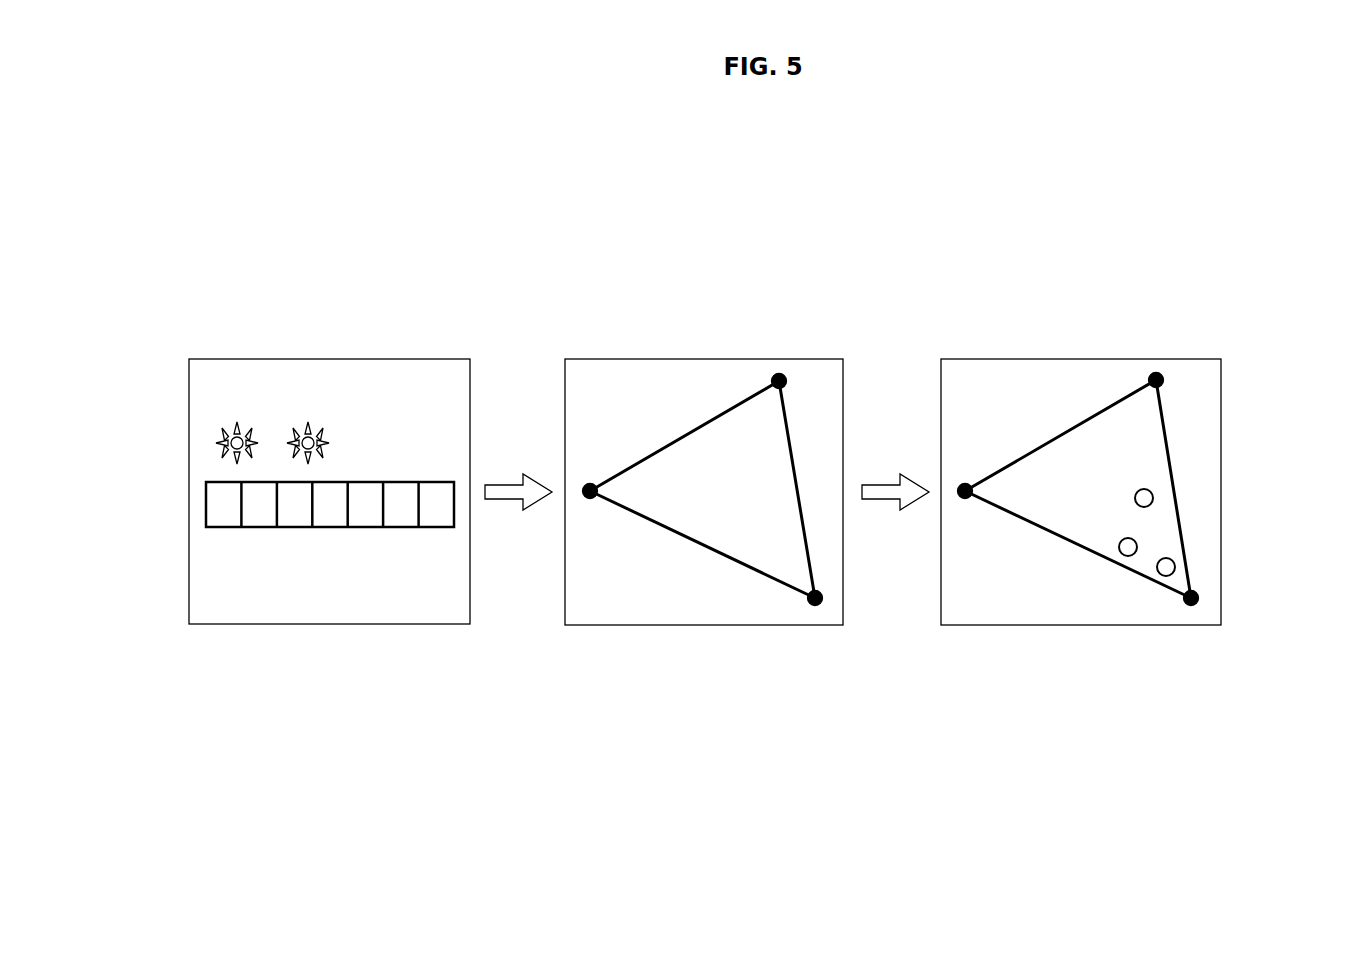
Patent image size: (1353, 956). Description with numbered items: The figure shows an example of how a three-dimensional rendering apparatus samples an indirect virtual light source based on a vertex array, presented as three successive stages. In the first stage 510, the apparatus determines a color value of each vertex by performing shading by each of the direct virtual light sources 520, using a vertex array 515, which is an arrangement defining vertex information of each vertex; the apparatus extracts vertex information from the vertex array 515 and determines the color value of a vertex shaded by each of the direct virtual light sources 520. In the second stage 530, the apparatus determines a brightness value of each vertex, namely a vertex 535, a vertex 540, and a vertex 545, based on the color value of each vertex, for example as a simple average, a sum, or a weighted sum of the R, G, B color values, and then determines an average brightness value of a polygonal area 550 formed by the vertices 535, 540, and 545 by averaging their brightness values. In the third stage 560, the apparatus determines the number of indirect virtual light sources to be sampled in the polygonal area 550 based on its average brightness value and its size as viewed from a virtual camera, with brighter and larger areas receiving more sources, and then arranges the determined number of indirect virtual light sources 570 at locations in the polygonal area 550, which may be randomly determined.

The vertex color value determination stage 510 is at (329, 359).
The vertex array 515 is at (206, 505).
The direct virtual light sources 520 is at (217, 443).
The vertex brightness value determination stage 530 is at (705, 359).
The vertex 535 is at (781, 373).
The vertex 540 is at (588, 488).
The vertex 545 is at (815, 607).
The polygonal area 550 is at (752, 572).
The indirect virtual light source sampling stage 560 is at (1081, 359).
The indirect virtual light sources 570 is at (1174, 558).